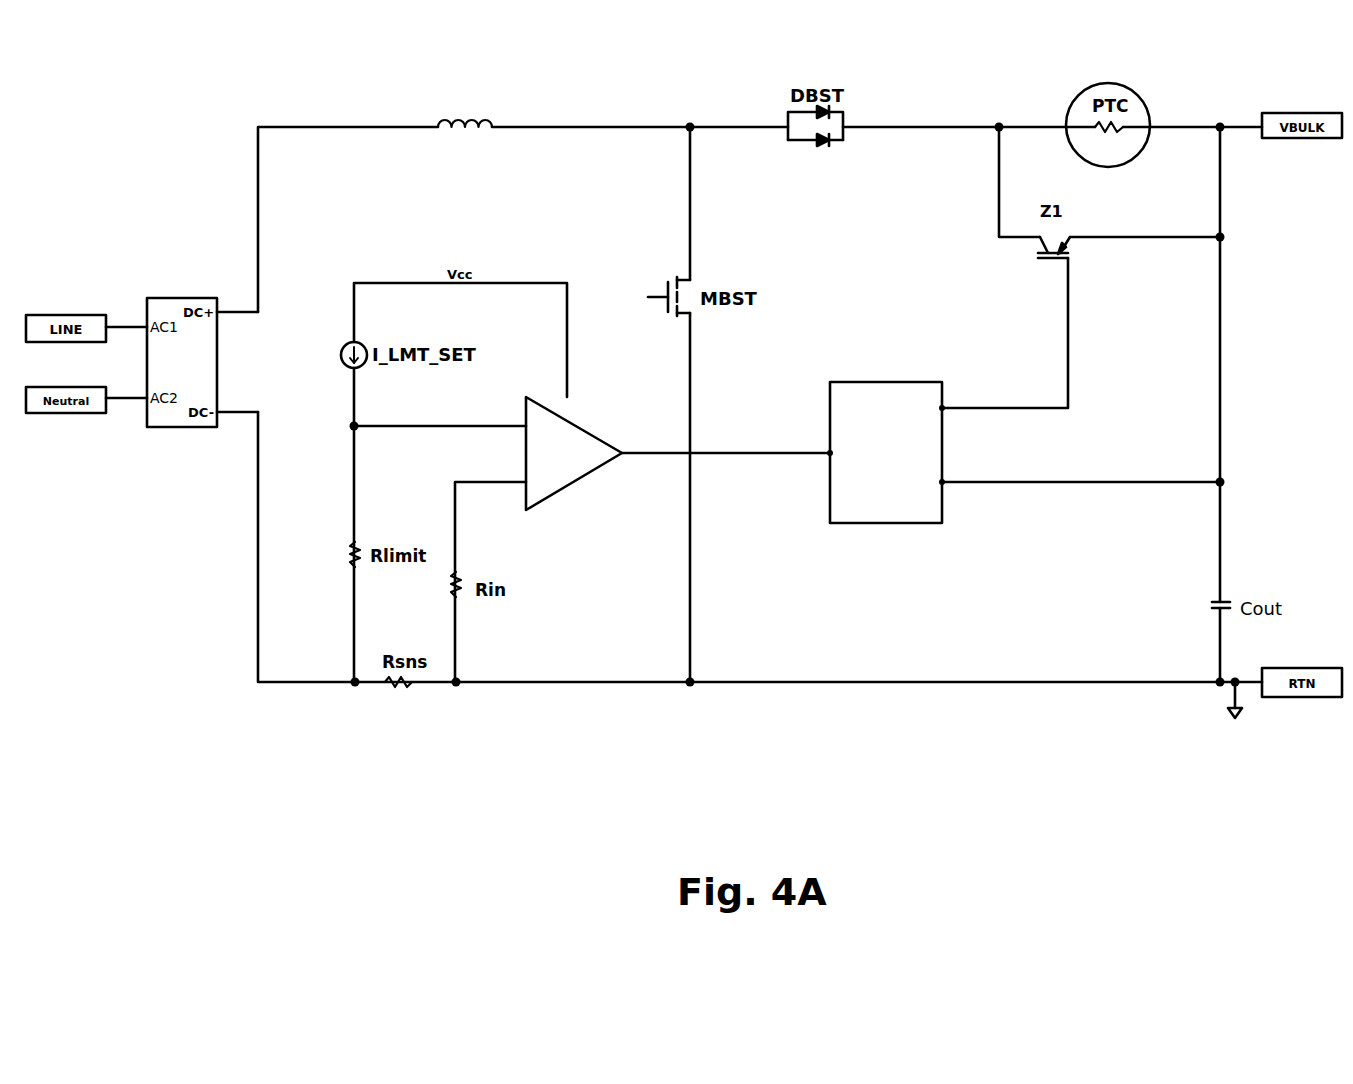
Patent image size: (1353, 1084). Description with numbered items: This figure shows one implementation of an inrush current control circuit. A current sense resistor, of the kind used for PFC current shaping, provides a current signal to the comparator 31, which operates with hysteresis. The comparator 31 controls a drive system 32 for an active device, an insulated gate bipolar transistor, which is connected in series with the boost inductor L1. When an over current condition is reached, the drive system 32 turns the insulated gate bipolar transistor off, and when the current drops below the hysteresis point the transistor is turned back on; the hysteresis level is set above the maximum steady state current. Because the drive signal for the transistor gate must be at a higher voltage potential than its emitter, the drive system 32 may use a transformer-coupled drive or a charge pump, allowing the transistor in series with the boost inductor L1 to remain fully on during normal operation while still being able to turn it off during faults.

The boost inductor L1 is at (487, 130).
The comparator 31 is at (580, 483).
The drive system 32 is at (948, 507).